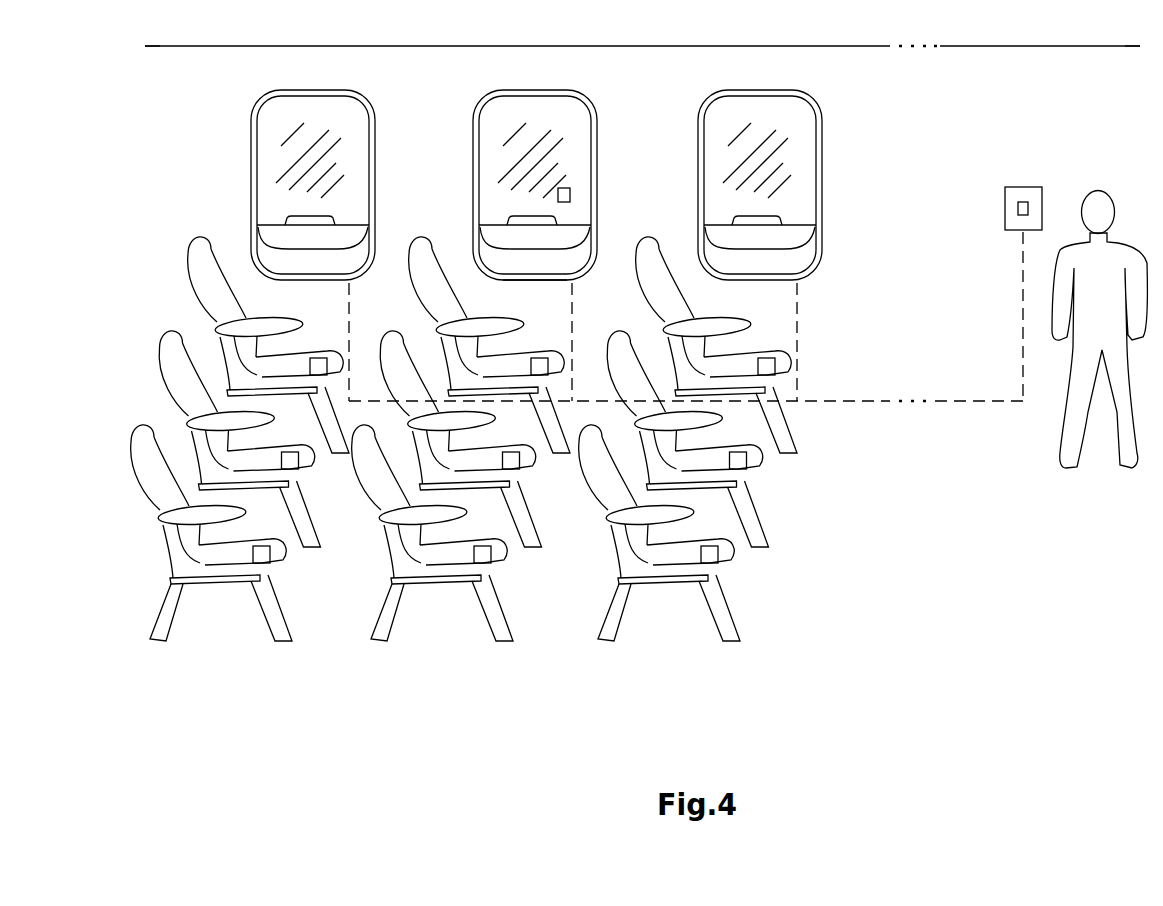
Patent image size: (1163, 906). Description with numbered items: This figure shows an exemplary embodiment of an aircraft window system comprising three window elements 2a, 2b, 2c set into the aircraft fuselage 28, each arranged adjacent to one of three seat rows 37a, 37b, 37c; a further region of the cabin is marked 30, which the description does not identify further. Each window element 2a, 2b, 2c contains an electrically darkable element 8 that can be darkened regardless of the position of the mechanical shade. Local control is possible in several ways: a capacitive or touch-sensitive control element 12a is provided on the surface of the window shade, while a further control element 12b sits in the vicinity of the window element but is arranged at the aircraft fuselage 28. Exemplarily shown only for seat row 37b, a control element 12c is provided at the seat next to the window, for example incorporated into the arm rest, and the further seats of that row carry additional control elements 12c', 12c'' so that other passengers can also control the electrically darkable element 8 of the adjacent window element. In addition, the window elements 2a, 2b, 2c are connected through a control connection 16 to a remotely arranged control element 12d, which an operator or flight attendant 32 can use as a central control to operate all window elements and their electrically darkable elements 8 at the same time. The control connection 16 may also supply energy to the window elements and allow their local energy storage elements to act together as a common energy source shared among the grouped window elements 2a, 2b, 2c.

The window element 2a is at (369, 97).
The window element 2b is at (592, 97).
The window element 2c is at (822, 142).
The electrically darkable element 8 is at (361, 142).
The control element 12a is at (571, 194).
The further control element 12b is at (576, 280).
The control element 12c is at (518, 330).
The control element 12c' is at (541, 489).
The control element 12c'' is at (527, 571).
The remote control element 12d is at (1023, 202).
The control connection 16 is at (833, 403).
The aircraft fuselage 28 is at (228, 90).
The rear end of cabin section 30 is at (1130, 90).
The operator or flight attendant 32 is at (1100, 480).
The seat row 37a is at (247, 653).
The seat row 37b is at (452, 653).
The seat row 37c is at (657, 653).